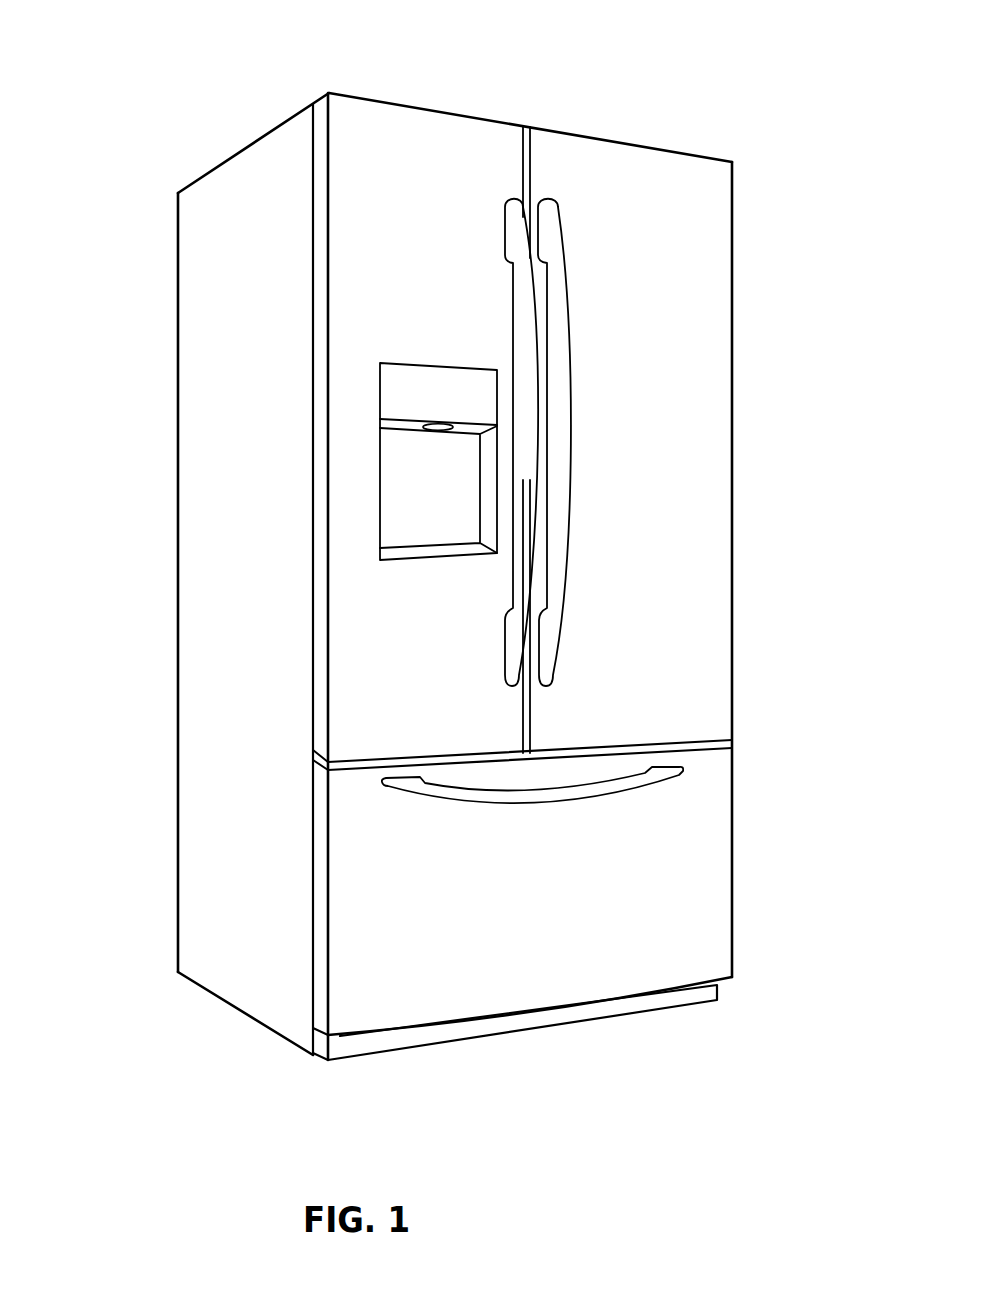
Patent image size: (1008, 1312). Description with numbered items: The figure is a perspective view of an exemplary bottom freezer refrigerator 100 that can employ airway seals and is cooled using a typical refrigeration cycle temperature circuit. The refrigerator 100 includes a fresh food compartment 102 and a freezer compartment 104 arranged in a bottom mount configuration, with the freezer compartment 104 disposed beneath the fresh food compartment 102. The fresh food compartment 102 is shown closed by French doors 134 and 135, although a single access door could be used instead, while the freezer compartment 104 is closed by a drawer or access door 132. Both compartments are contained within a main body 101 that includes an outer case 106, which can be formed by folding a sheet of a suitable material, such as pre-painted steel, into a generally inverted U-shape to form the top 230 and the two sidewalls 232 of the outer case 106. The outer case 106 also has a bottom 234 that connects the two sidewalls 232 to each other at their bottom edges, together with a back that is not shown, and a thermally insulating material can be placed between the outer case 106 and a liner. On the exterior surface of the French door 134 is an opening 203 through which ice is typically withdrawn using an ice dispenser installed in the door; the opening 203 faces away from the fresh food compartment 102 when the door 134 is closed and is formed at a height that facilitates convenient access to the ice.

The refrigerator 100 is at (446, 535).
The cabinet 101 is at (208, 778).
The fresh food compartment 102 is at (577, 448).
The freezer compartment 104 is at (577, 890).
The outer case 106 is at (194, 574).
The access door 132 is at (562, 897).
The French door 134 is at (459, 439).
The French door 135 is at (588, 440).
The opening 203 is at (437, 431).
The top 230 is at (231, 157).
The sidewalls 232 is at (207, 447).
The bottom 234 is at (238, 1016).